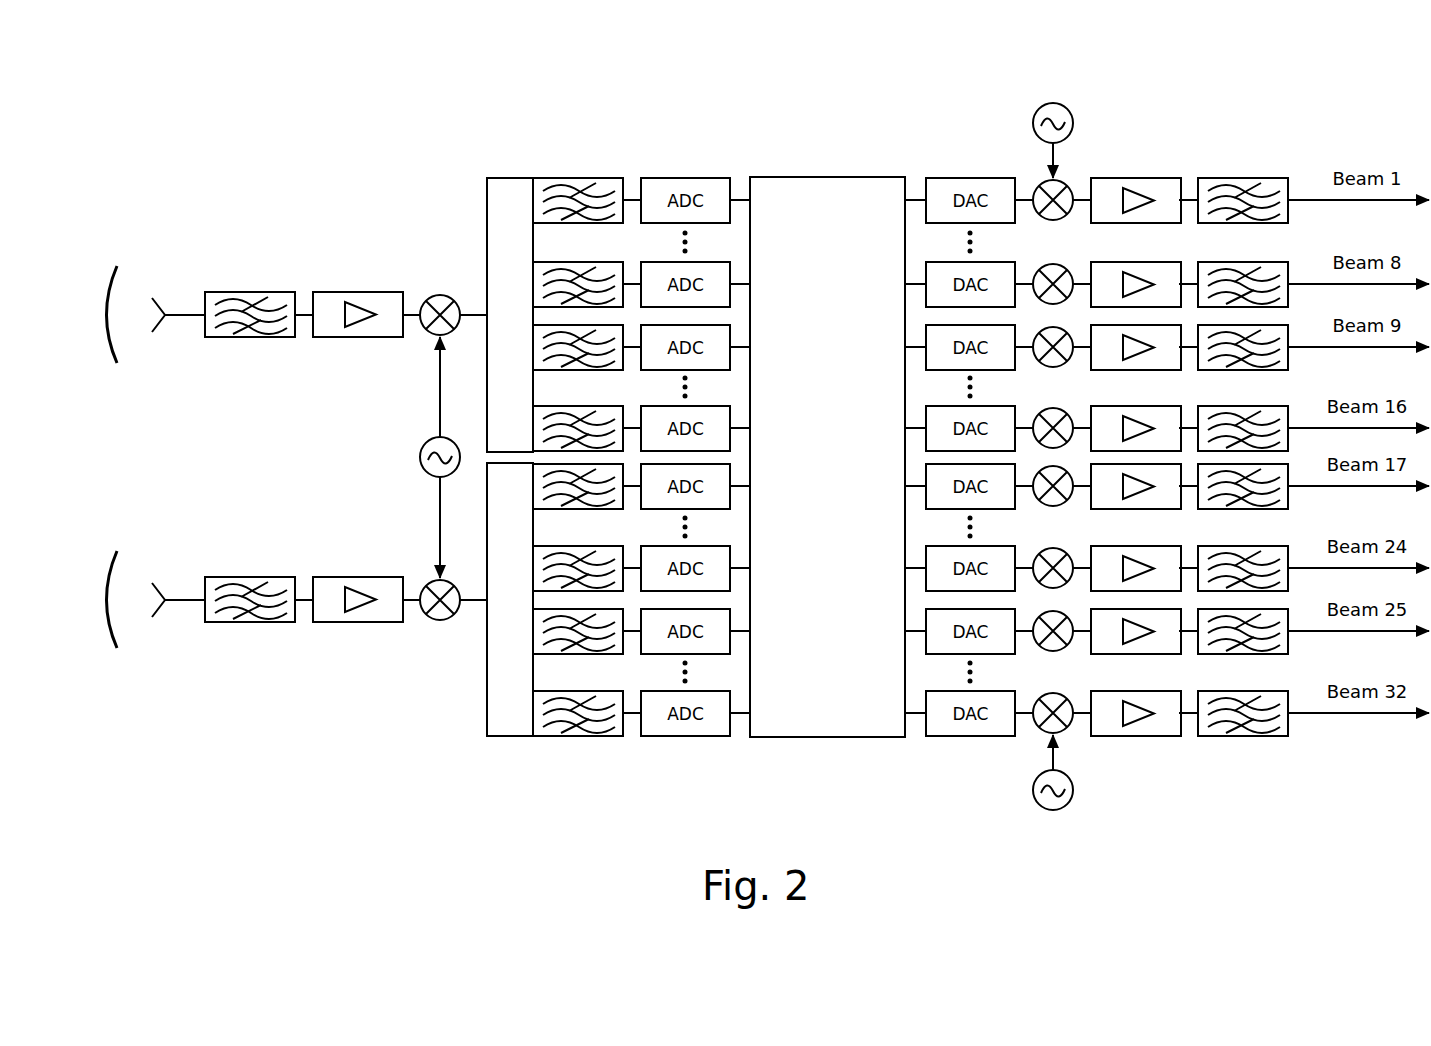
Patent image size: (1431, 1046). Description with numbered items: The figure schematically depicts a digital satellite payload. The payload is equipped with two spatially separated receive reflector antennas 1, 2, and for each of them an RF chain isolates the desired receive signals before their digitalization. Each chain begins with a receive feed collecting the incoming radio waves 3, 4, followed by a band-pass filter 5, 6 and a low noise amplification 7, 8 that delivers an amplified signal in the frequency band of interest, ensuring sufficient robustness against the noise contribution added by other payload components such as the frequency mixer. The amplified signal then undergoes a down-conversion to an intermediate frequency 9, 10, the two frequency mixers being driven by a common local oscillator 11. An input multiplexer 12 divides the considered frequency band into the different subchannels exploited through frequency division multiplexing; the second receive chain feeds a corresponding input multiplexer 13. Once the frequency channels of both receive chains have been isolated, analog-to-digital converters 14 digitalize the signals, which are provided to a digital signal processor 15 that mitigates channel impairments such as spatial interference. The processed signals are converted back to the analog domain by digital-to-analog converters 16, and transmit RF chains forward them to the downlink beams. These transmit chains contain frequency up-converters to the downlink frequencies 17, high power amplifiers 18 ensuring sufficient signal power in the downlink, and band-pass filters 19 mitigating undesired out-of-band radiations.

The receive reflector antenna 1 is at (107, 277).
The receive reflector antenna 2 is at (107, 562).
The receive feed 3 is at (193, 315).
The receive feed 4 is at (193, 600).
The band-pass filter 5 is at (250, 292).
The band-pass filter 6 is at (250, 577).
The low noise amplification 7 is at (395, 292).
The low noise amplification 8 is at (395, 577).
The down-conversion to an intermediate frequency 9 is at (440, 295).
The down-conversion to an intermediate frequency 10 is at (440, 620).
The common local oscillator 11 is at (420, 458).
The input multiplexer 12 is at (505, 178).
The input multiplexer 13 is at (513, 737).
The analog-to-digital converters 14 is at (685, 176).
The digital signal processor 15 is at (828, 177).
The digital-to-analog converters 16 is at (970, 176).
The frequency up-converters 17 is at (1053, 101).
The high power amplifiers 18 is at (1167, 176).
The band-pass filters 19 is at (1243, 176).